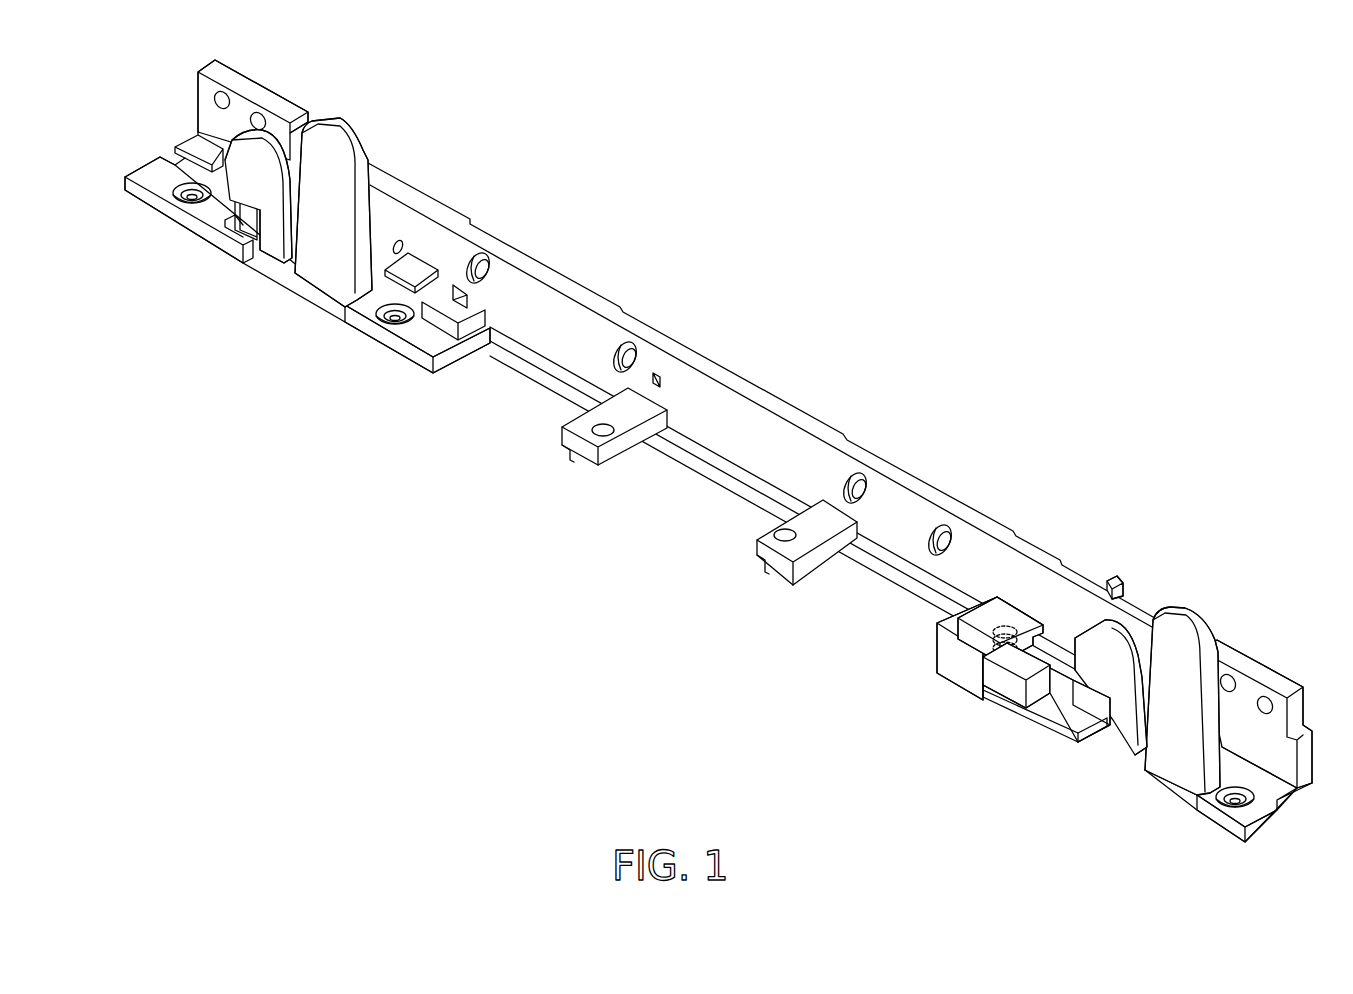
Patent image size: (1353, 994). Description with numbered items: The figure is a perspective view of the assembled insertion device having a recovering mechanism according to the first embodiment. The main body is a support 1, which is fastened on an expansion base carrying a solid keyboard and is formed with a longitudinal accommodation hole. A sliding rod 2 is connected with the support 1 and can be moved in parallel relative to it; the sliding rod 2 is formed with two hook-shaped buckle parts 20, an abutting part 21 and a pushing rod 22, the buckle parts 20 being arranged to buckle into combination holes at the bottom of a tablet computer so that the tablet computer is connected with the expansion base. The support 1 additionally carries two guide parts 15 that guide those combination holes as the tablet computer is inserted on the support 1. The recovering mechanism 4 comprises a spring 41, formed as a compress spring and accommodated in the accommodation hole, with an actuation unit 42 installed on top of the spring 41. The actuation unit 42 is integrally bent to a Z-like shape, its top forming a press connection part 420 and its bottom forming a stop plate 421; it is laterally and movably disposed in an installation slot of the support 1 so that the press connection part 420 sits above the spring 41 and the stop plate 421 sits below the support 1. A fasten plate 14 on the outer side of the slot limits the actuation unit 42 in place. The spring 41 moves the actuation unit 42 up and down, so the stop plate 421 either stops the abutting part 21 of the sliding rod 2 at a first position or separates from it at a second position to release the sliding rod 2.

The support 1 is at (725, 418).
The sliding rod 2 is at (1118, 727).
The recovering mechanism 4 is at (953, 642).
The fasten plate 14 is at (1007, 686).
The guide part 15 is at (325, 190).
The buckle part 20 is at (245, 148).
The abutting part 21 is at (1078, 717).
The pushing rod 22 is at (1118, 582).
The spring 41 is at (985, 677).
The actuation unit 42 is at (1013, 607).
The press connection part 420 is at (983, 615).
The stop plate 421 is at (1030, 720).